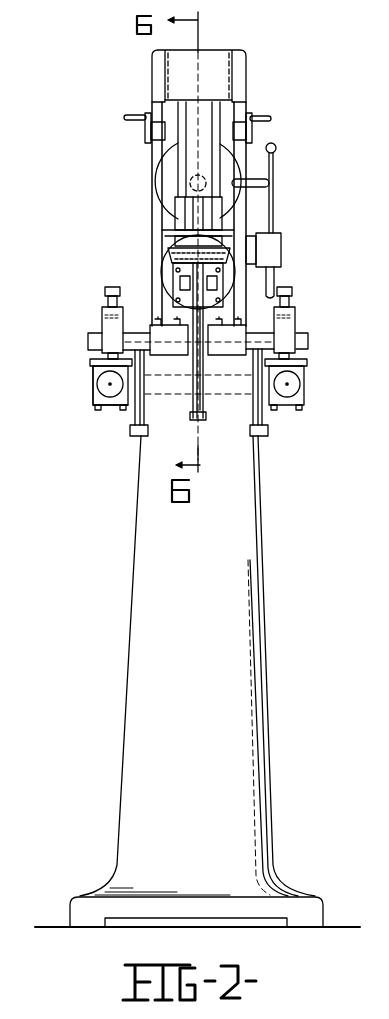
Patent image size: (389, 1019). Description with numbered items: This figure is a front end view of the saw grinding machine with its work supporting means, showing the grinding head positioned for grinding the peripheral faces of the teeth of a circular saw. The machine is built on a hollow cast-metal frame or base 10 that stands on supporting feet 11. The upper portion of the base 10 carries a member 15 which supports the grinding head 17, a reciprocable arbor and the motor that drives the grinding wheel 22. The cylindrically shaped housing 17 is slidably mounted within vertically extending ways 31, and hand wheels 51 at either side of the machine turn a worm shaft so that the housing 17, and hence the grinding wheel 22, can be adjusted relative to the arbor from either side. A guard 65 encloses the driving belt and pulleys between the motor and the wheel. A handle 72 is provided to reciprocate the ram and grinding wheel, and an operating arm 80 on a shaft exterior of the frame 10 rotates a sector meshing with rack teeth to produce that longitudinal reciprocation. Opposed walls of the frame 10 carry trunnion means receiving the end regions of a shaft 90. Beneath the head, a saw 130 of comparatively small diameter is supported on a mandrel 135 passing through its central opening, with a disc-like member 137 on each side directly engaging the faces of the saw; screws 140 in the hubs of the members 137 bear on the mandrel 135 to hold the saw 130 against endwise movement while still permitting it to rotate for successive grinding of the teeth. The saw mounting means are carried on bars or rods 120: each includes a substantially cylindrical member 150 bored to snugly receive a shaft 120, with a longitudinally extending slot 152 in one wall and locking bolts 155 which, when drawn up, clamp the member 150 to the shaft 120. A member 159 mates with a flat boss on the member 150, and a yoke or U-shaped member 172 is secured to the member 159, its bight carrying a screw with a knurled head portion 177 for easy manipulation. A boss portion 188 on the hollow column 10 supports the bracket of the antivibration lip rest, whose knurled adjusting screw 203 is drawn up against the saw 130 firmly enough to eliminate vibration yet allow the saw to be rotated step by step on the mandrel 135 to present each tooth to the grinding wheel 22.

The frame or base 10 is at (265, 546).
The supporting feet 11 is at (72, 913).
The member 15 is at (158, 210).
The grinding head 17 is at (185, 170).
The grinding wheel 22 is at (236, 258).
The vertically extending ways 31 is at (230, 207).
The hand wheels 51 is at (145, 135).
The guard 65 is at (222, 58).
The handle 72 is at (273, 168).
The operating arm 80 is at (274, 214).
The shaft 90 is at (241, 375).
The bars or rods 120 is at (110, 383).
The saw 130 is at (199, 420).
The mandrel 135 is at (308, 337).
The disc-like members 137 is at (188, 382).
The screws 140 is at (160, 322).
The cylindrical member 150 is at (115, 407).
The slot 152 is at (97, 383).
The locking bolts 155 is at (90, 409).
The member 159 is at (312, 358).
The yoke or U-shaped member 172 is at (102, 309).
The knurled head portion 177 is at (107, 289).
The boss portion 188 is at (168, 256).
The knurled adjusting screw 203 is at (174, 282).